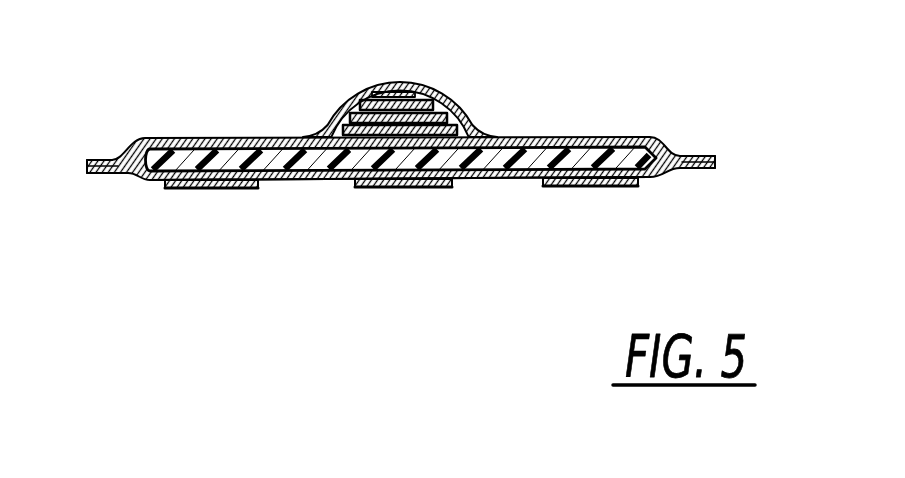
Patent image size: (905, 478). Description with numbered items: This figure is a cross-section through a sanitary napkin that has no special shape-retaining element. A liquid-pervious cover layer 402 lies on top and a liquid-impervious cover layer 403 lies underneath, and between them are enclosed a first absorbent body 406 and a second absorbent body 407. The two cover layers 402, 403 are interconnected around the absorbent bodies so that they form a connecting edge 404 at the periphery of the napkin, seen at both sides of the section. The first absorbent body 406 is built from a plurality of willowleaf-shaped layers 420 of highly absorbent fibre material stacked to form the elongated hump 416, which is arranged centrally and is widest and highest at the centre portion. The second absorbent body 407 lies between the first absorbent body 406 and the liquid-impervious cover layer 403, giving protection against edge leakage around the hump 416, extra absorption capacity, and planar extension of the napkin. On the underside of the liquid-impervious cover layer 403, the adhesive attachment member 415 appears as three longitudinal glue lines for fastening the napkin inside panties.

The liquid-pervious cover layer 402 is at (567, 137).
The liquid-impervious cover layer 403 is at (488, 178).
The connecting edge 404 is at (104, 160).
The first absorbent body 406 is at (356, 109).
The second absorbent body 407 is at (193, 158).
The adhesive attachment member 415 is at (360, 187).
The elongated hump 416 is at (400, 84).
The willowleaf-shaped layers 420 is at (460, 124).